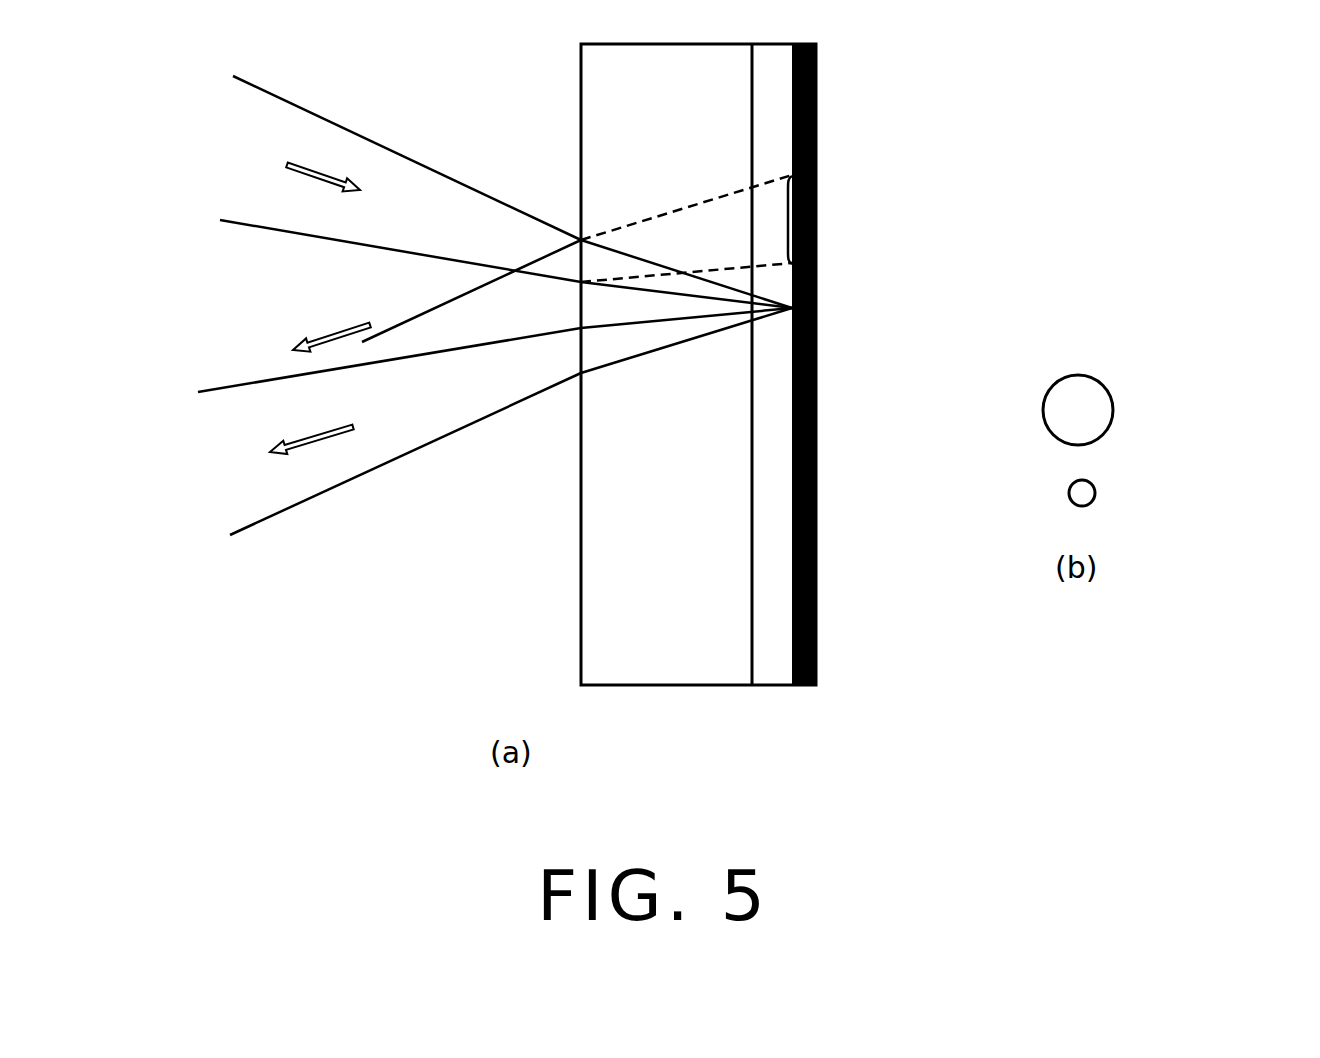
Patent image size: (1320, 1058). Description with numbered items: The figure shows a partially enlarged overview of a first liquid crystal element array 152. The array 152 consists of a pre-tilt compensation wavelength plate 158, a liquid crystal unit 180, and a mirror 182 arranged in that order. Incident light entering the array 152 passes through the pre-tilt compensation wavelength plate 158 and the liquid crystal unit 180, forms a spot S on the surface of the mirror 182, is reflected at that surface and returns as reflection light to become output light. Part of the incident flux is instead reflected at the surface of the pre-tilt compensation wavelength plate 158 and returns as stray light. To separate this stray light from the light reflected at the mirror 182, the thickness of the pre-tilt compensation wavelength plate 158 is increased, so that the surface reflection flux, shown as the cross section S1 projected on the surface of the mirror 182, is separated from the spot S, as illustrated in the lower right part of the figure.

The first liquid crystal element array 152 is at (867, 768).
The pre-tilt compensation wavelength plate 158 is at (581, 655).
The liquid crystal unit 180 is at (768, 685).
The mirror 182 is at (807, 685).
The cross section S1 is at (788, 219).
The spot S is at (792, 308).